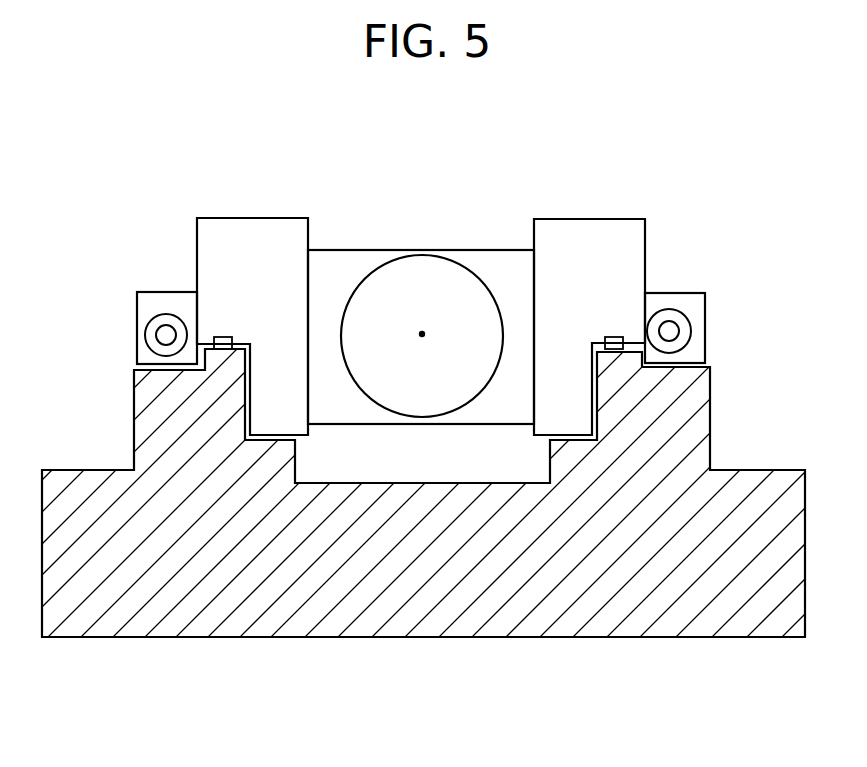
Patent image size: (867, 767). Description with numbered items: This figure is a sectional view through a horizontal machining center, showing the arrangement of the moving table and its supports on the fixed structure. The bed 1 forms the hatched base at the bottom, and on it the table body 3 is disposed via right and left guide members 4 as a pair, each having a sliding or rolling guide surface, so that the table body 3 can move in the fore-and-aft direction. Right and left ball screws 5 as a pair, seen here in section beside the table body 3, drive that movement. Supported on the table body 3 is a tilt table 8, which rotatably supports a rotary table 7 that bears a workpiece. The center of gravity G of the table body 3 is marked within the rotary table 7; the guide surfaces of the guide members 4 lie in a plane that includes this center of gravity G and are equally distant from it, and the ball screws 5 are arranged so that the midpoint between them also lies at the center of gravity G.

The bed 1 is at (378, 577).
The table body 3 is at (262, 252).
The guide members 4 is at (222, 343).
The ball screws 5 is at (140, 333).
The rotary table 7 is at (415, 320).
The tilt table 8 is at (505, 270).
The center of gravity G is at (428, 334).